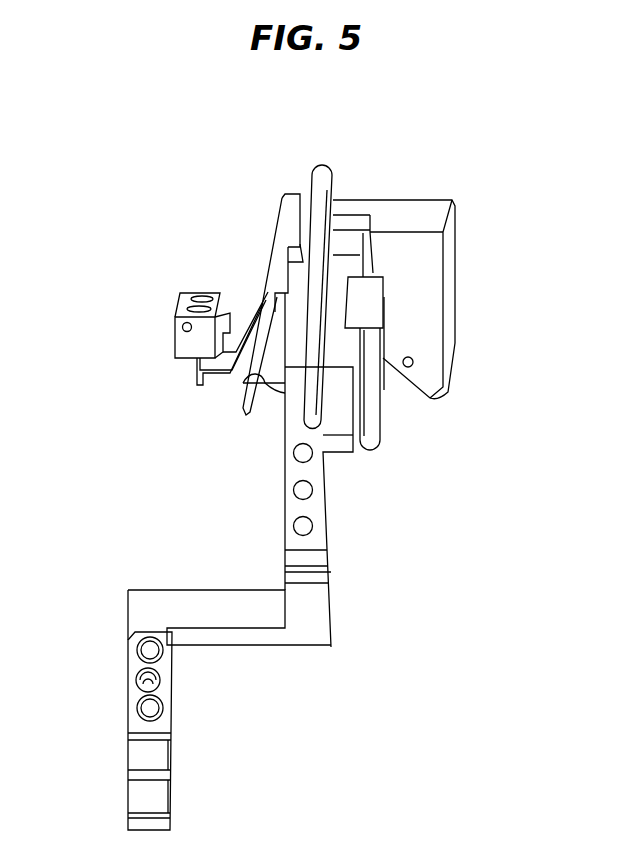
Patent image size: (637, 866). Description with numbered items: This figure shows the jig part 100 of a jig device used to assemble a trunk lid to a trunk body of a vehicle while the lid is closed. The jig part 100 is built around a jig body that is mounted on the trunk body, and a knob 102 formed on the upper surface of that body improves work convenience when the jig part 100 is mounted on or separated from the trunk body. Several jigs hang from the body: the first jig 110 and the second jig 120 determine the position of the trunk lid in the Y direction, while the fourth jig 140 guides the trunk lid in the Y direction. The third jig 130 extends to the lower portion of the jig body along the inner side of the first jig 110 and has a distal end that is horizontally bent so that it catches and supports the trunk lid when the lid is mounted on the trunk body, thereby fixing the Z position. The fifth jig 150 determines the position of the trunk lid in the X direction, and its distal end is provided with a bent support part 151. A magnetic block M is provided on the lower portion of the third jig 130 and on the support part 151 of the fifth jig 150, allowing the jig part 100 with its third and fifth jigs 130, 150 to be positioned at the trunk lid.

The jig part 100 is at (116, 122).
The knob 102 is at (320, 168).
The first jig 110 is at (452, 284).
The second jig 120 is at (372, 425).
The third jig 130 is at (283, 232).
The fourth jig 140 is at (247, 383).
The fifth jig 150 is at (136, 686).
The support part 151 is at (136, 752).
The magnetic block M is at (204, 297).